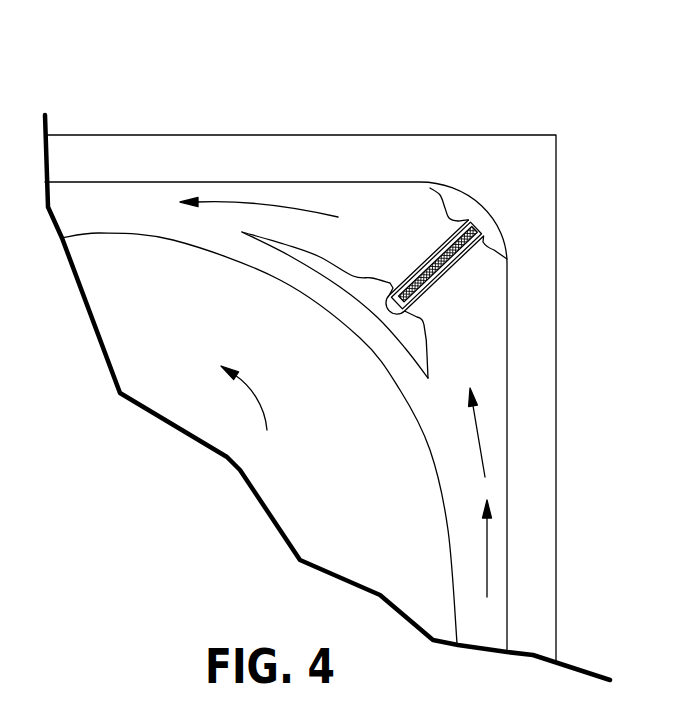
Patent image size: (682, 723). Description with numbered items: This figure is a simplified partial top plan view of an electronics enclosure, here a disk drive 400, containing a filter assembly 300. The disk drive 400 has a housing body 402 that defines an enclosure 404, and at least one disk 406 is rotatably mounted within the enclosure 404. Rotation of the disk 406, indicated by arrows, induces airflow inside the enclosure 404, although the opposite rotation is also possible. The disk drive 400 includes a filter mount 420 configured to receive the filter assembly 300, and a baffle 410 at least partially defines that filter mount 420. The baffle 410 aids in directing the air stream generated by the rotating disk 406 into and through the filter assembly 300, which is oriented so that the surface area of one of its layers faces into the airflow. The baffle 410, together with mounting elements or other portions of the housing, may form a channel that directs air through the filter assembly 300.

The disk drive 400 is at (342, 72).
The housing body 402 is at (165, 160).
The enclosure 404 is at (120, 200).
The disk 406 is at (356, 481).
The baffle 410 is at (323, 273).
The filter mount 420 is at (452, 207).
The filter assembly 300 is at (469, 303).